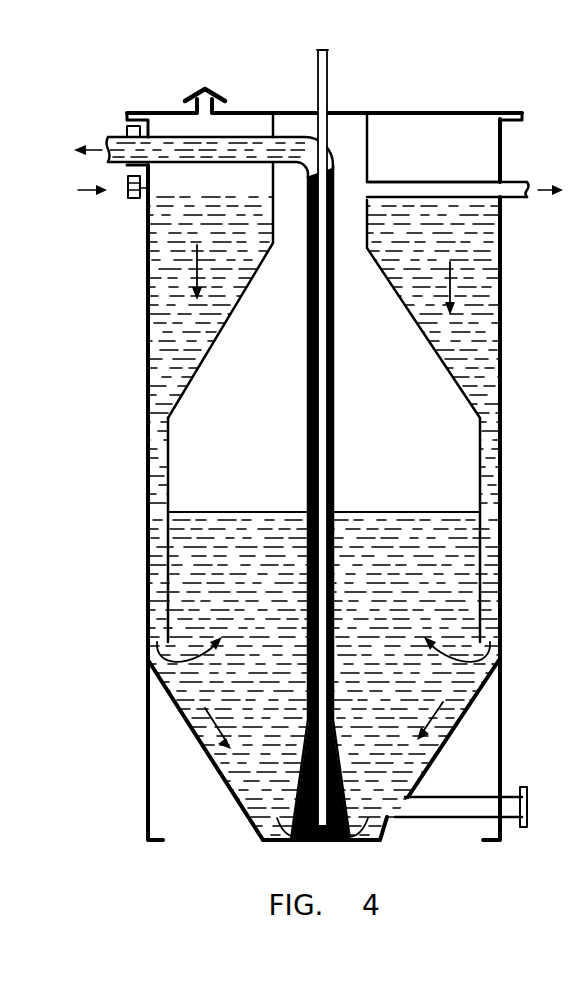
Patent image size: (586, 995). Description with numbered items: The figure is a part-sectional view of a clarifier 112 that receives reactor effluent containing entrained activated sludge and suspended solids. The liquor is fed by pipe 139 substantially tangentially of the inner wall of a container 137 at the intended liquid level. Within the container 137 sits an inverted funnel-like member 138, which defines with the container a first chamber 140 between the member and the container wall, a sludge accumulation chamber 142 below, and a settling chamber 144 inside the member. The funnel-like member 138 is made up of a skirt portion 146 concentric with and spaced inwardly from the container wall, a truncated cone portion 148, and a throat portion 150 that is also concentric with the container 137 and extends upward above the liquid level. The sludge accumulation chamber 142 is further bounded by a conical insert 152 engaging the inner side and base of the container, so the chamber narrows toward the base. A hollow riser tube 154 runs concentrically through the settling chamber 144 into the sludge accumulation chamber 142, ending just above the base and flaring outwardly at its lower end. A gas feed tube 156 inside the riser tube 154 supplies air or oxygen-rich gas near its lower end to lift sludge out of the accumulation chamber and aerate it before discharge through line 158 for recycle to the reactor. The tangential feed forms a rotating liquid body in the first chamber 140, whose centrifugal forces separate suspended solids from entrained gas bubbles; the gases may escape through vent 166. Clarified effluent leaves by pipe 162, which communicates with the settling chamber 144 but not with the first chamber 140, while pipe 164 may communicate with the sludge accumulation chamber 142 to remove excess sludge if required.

The clarifier 112 is at (484, 98).
The container 137 is at (146, 470).
The inverted funnel-like member 138 is at (176, 483).
The pipe 139 is at (128, 199).
The first chamber 140 is at (175, 326).
The sludge accumulation chamber 142 is at (254, 780).
The settling chamber 144 is at (399, 541).
The skirt portion 146 is at (484, 474).
The truncated cone portion 148 is at (200, 375).
The throat portion 150 is at (368, 148).
The conical insert 152 is at (203, 752).
The hollow riser tube 154 is at (334, 390).
The gas feed tube 156 is at (322, 88).
The line 158 is at (115, 140).
The pipe 162 is at (518, 188).
The pipe 164 is at (433, 812).
The vent 166 is at (208, 92).